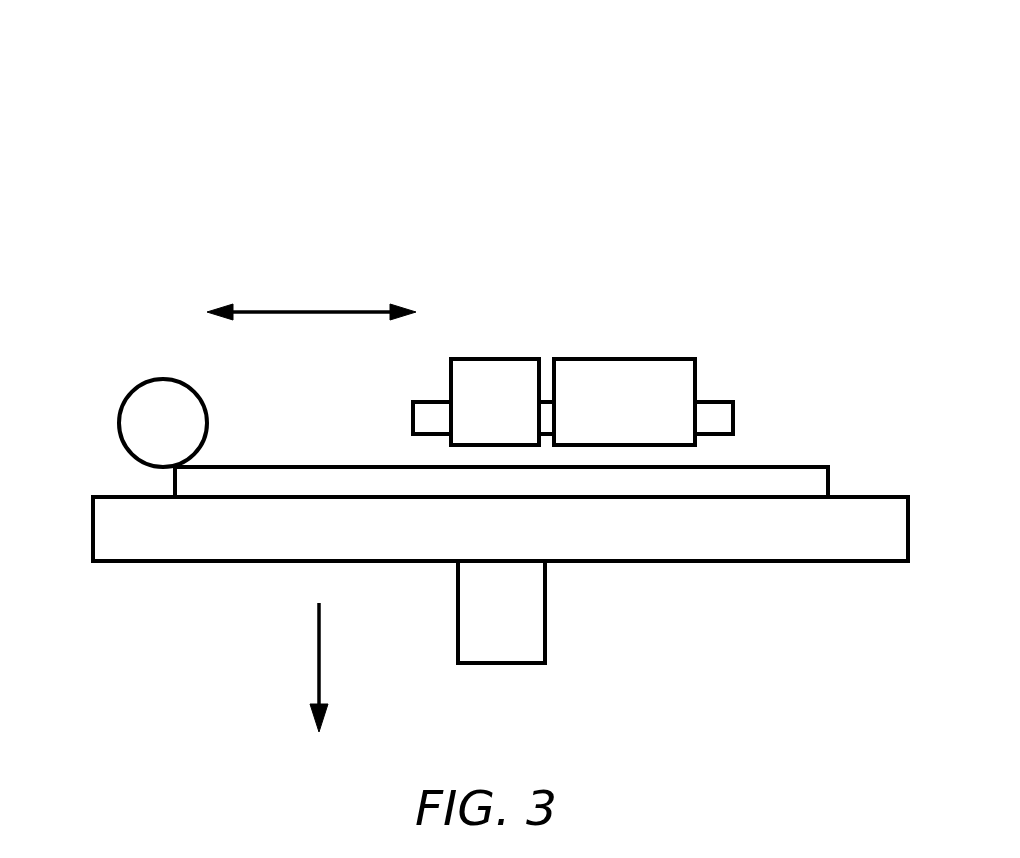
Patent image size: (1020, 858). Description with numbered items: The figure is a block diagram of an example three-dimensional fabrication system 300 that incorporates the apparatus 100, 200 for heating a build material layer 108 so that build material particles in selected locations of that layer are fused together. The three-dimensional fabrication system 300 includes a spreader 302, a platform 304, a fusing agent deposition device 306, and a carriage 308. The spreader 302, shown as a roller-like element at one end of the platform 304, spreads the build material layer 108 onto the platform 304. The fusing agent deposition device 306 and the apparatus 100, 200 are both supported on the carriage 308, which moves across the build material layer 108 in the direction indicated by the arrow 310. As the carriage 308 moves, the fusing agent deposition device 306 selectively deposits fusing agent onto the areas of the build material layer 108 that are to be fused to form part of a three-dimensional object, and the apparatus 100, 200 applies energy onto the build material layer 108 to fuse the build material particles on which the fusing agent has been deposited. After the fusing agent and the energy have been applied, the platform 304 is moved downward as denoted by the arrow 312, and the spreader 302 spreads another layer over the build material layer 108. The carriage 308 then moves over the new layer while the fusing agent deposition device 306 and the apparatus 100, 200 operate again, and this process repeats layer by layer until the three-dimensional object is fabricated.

The 3D fabrication system 300 is at (312, 124).
The spreader 302 is at (120, 405).
The platform 304 is at (698, 561).
The fusing agent deposition device 306 is at (472, 359).
The apparatus 100 is at (643, 341).
The apparatus 200 is at (638, 359).
The carriage 308 is at (733, 402).
The arrow 310 is at (297, 312).
The arrow 312 is at (319, 668).
The build material layer 108 is at (207, 499).